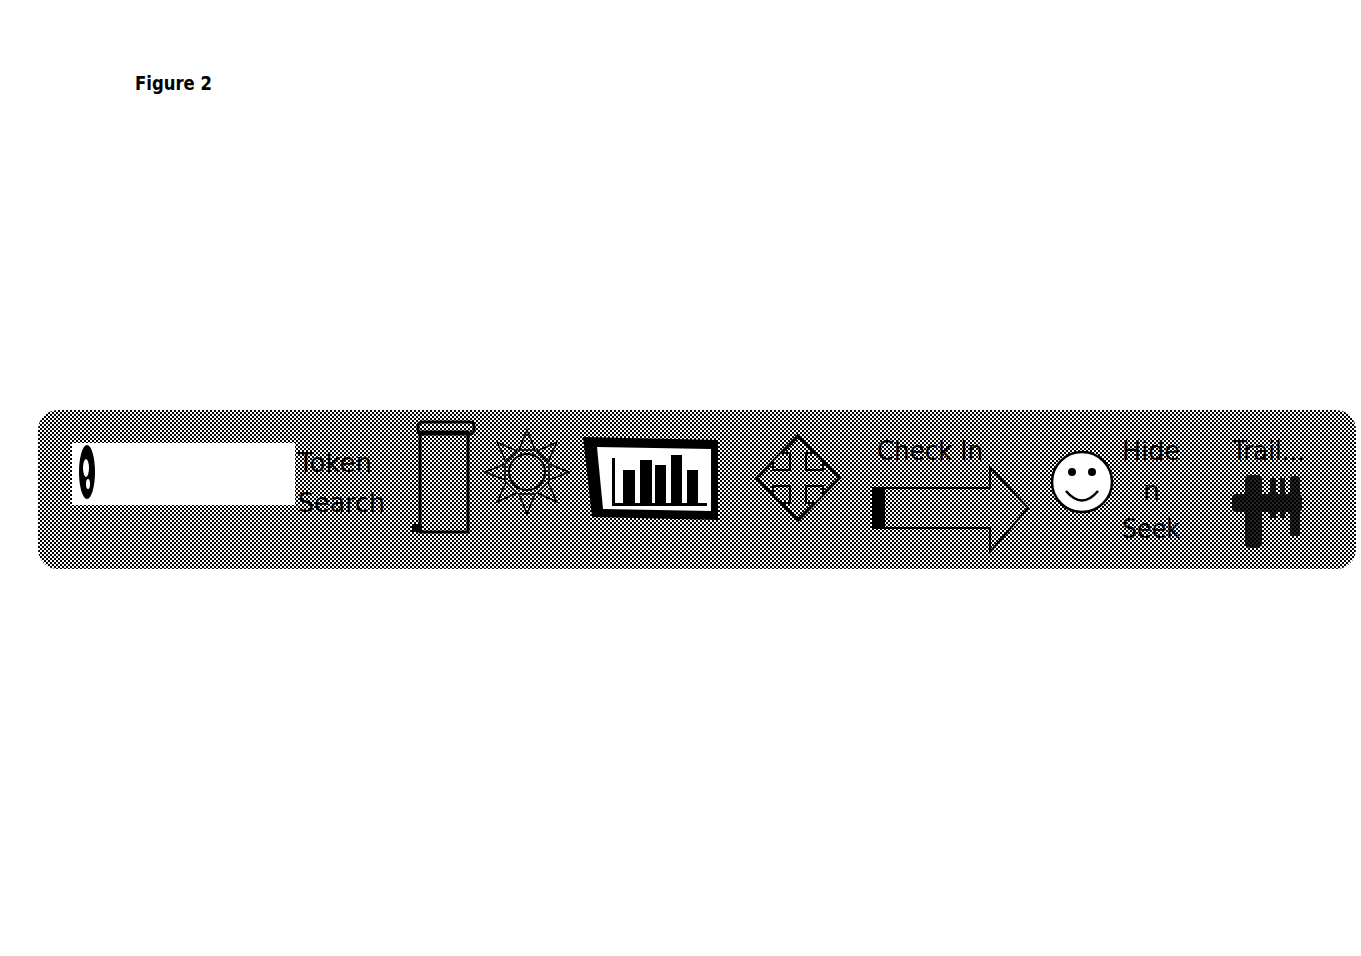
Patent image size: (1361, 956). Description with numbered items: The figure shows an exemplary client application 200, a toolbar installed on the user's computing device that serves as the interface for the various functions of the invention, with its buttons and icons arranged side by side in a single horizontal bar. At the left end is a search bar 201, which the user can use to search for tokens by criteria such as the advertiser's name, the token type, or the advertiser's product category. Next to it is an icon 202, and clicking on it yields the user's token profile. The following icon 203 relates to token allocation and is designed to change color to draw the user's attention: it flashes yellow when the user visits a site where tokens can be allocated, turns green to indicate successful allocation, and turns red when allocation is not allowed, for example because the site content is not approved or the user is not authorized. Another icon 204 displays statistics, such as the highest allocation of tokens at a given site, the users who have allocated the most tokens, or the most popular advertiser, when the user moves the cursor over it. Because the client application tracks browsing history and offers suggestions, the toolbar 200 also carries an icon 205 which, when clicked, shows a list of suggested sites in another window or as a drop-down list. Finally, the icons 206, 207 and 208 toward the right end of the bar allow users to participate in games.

The client application 200 is at (697, 624).
The search bar 201 is at (237, 490).
The icon 202 is at (433, 440).
The icon 203 is at (527, 440).
The icon 204 is at (651, 520).
The icon 205 is at (793, 440).
The icon 206 is at (950, 528).
The icon 207 is at (1113, 410).
The icon 208 is at (1257, 548).